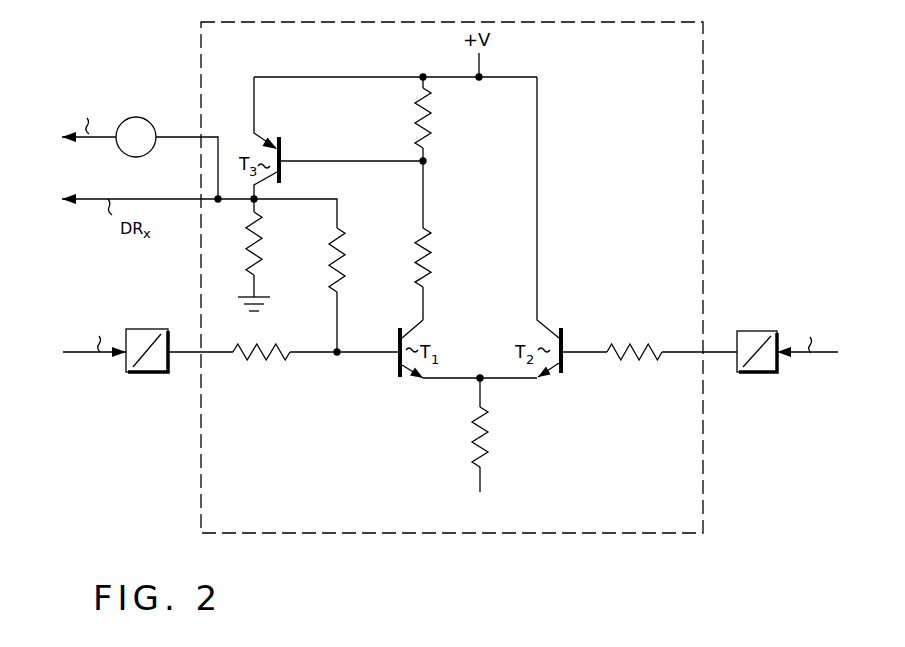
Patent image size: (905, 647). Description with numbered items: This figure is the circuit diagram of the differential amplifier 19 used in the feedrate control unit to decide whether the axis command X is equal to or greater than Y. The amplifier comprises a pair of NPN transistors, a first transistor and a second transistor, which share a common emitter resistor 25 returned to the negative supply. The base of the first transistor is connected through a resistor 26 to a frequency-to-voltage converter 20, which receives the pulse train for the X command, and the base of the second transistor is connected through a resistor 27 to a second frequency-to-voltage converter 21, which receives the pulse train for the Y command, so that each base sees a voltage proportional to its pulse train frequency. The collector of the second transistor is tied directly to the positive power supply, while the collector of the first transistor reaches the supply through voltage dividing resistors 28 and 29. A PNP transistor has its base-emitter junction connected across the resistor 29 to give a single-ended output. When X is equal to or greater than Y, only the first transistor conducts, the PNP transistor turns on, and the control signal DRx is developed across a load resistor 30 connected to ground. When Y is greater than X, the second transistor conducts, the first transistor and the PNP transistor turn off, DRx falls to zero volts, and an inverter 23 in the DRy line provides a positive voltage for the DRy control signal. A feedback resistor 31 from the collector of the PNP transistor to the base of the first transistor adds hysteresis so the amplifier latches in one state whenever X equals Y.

The differential amplifier 19 is at (692, 466).
The frequency-to-voltage converter 20 is at (147, 372).
The frequency-to-voltage converter 21 is at (754, 372).
The inverter 23 is at (150, 123).
The common emitter resistor 25 is at (486, 440).
The resistor 26 is at (282, 356).
The resistor 27 is at (654, 356).
The voltage dividing resistor 28 is at (431, 238).
The voltage dividing resistor 29 is at (431, 138).
The load resistor 30 is at (248, 251).
The feedback resistor 31 is at (330, 250).